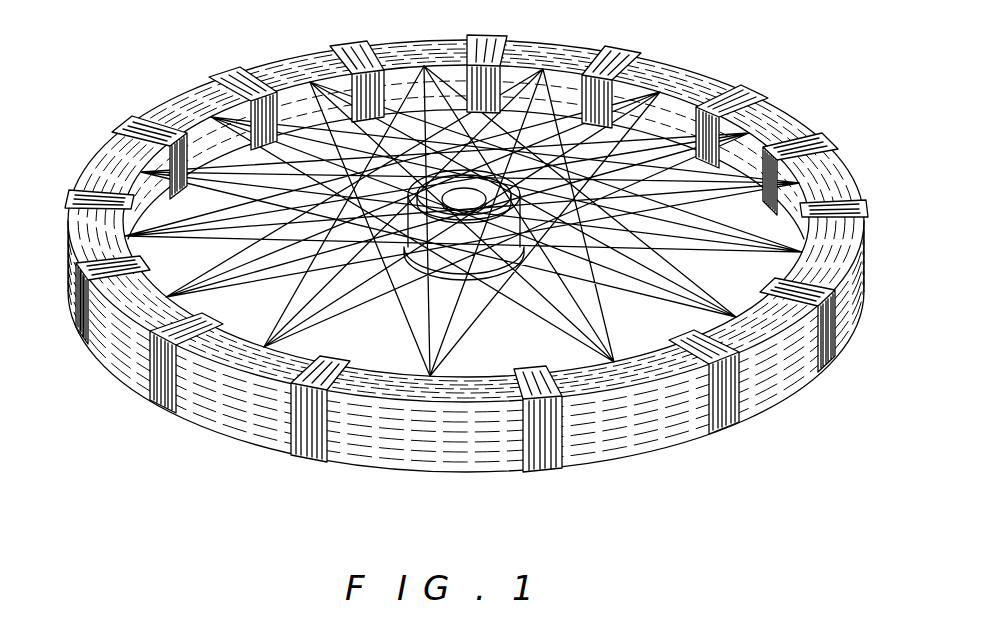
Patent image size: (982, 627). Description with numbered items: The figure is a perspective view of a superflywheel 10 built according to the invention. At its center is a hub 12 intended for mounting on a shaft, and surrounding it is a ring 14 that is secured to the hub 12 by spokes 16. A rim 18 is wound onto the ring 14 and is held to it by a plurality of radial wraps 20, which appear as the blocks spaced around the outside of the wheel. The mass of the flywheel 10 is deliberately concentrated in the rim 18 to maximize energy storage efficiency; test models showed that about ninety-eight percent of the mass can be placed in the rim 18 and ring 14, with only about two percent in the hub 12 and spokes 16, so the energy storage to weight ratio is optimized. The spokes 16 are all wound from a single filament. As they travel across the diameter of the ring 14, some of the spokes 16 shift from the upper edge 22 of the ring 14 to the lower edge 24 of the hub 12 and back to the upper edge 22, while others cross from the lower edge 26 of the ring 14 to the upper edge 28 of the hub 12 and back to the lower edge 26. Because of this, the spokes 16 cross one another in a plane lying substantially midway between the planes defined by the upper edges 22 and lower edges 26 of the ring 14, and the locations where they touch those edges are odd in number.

The superflywheel 10 is at (695, 66).
The hub 12 is at (485, 167).
The ring 14 is at (760, 177).
The spokes 16 is at (399, 330).
The rim 18 is at (827, 175).
The radial wraps 20 is at (233, 80).
The upper edge of the ring 22 is at (557, 45).
The lower edge of the hub 24 is at (433, 277).
The lower edge of the ring 26 is at (412, 107).
The upper edge of the hub 28 is at (442, 167).